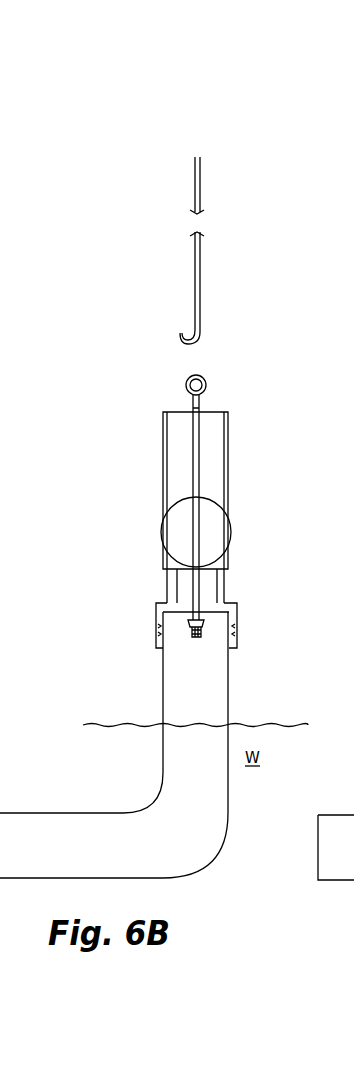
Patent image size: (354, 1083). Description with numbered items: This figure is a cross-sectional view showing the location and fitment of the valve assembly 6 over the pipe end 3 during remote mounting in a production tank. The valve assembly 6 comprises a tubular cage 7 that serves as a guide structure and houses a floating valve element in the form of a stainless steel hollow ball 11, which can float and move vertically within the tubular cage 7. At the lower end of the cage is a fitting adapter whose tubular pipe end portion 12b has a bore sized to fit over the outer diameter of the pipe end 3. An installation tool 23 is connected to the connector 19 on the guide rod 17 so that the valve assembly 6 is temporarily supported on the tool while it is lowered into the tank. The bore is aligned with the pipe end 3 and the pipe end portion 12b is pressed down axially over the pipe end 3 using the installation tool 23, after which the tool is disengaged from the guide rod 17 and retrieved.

The installation tool 23 is at (200, 267).
The connector 19 is at (206, 385).
The guide rod 17 is at (200, 438).
The tubular cage 7 is at (228, 485).
The ball 11 is at (231, 532).
The pipe end portion 12b is at (237, 625).
The pipe end 3 is at (229, 710).
The valve assembly 6 is at (142, 572).